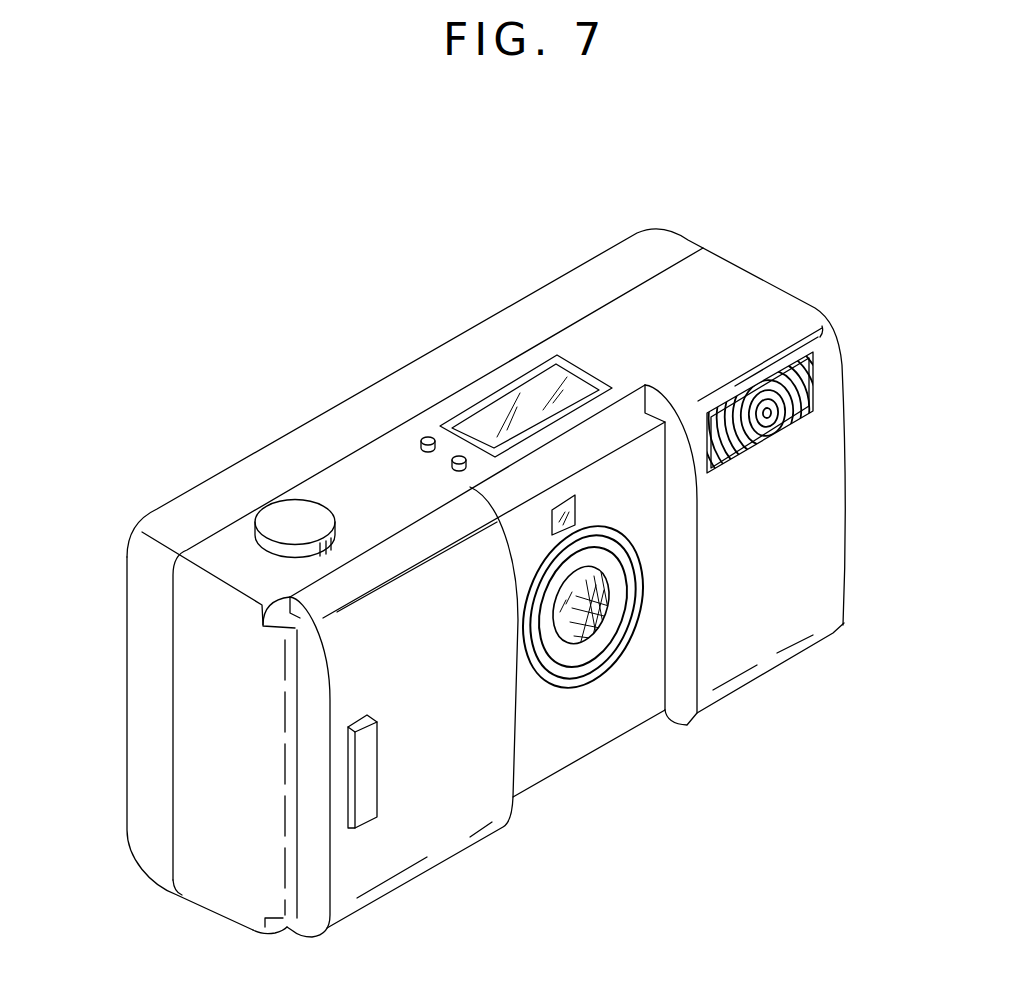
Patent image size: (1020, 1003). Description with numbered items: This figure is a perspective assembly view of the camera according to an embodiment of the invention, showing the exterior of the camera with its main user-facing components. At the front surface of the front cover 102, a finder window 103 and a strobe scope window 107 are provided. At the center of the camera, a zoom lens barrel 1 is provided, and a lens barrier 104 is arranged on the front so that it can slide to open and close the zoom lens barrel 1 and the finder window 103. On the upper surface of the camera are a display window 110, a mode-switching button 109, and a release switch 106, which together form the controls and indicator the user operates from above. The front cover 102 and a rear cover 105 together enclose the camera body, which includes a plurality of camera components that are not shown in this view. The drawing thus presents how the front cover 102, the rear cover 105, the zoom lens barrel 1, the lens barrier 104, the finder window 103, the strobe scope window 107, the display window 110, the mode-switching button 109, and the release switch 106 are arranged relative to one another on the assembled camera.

The zoom lens barrel 1 is at (577, 625).
The front cover 102 is at (210, 885).
The finder window 103 is at (577, 512).
The lens barrier 104 is at (430, 827).
The rear cover 105 is at (153, 802).
The release switch 106 is at (290, 528).
The strobe scope window 107 is at (785, 397).
The mode-switching button 109 is at (459, 455).
The display window 110 is at (504, 384).